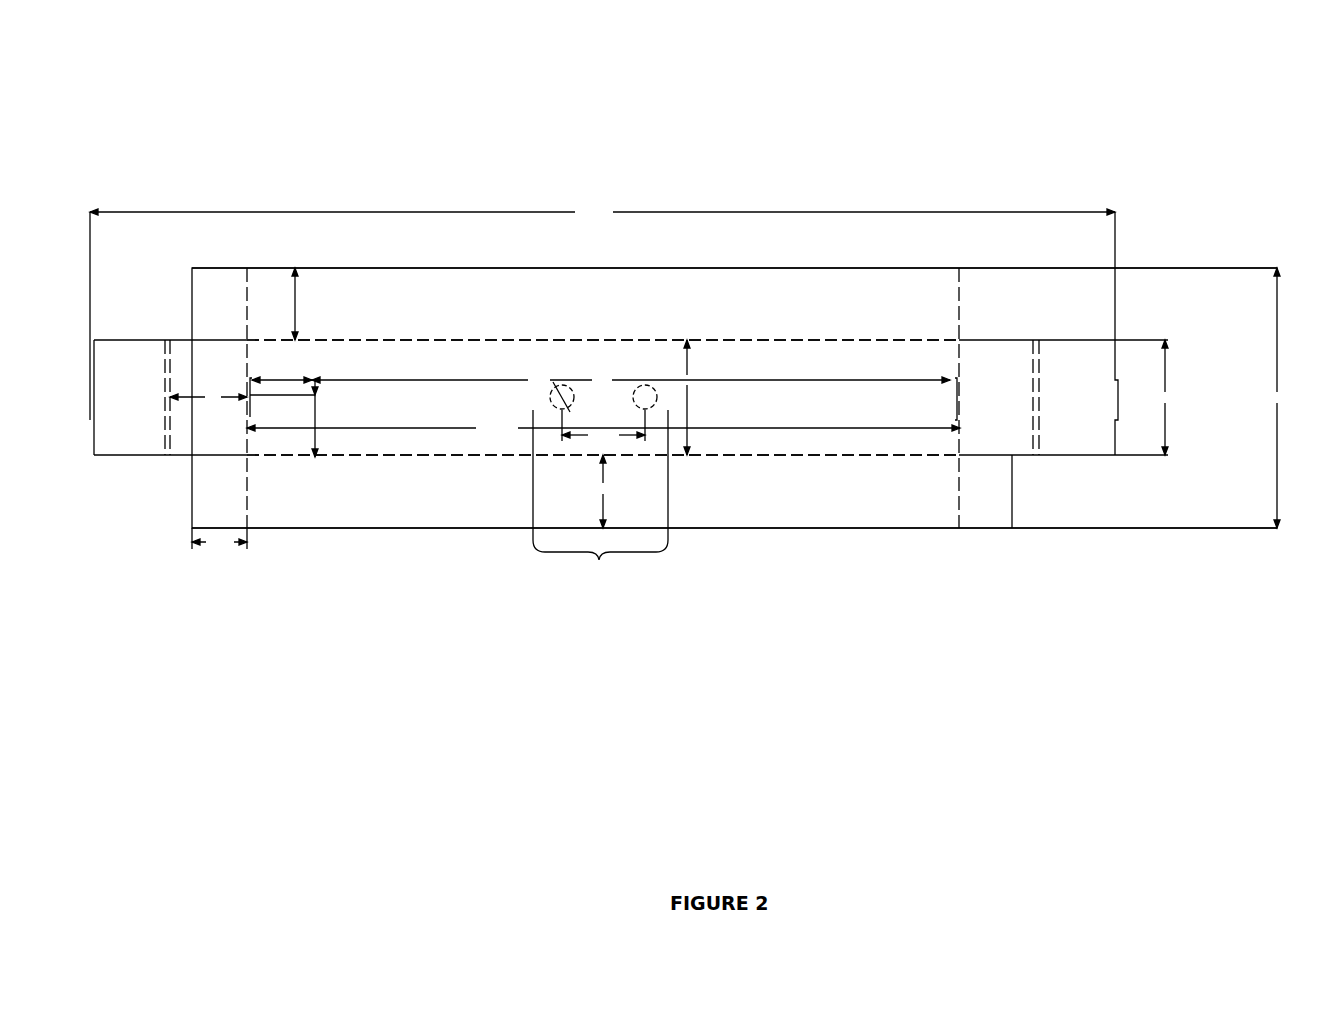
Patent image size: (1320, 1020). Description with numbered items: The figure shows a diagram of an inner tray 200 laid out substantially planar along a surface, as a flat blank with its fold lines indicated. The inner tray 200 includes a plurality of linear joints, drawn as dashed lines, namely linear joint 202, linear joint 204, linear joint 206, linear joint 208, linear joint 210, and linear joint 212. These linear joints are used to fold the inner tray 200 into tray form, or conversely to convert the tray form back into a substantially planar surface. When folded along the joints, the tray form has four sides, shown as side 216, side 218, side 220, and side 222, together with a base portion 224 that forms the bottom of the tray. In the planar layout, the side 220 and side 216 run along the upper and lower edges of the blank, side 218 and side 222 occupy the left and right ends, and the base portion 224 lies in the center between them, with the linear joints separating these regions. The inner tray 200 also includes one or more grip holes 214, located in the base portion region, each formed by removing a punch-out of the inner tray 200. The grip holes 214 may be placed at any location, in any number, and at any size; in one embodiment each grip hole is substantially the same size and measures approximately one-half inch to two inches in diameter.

The inner tray 200 is at (1117, 108).
The linear joint 202 is at (166, 422).
The linear joint 204 is at (247, 443).
The linear joint 206 is at (768, 343).
The linear joint 208 is at (885, 445).
The linear joint 210 is at (962, 438).
The linear joint 212 is at (1027, 420).
The grip holes 214 is at (599, 560).
The side 216 is at (492, 493).
The side 218 is at (215, 358).
The side 220 is at (493, 290).
The side 222 is at (1003, 397).
The base portion 224 is at (852, 395).